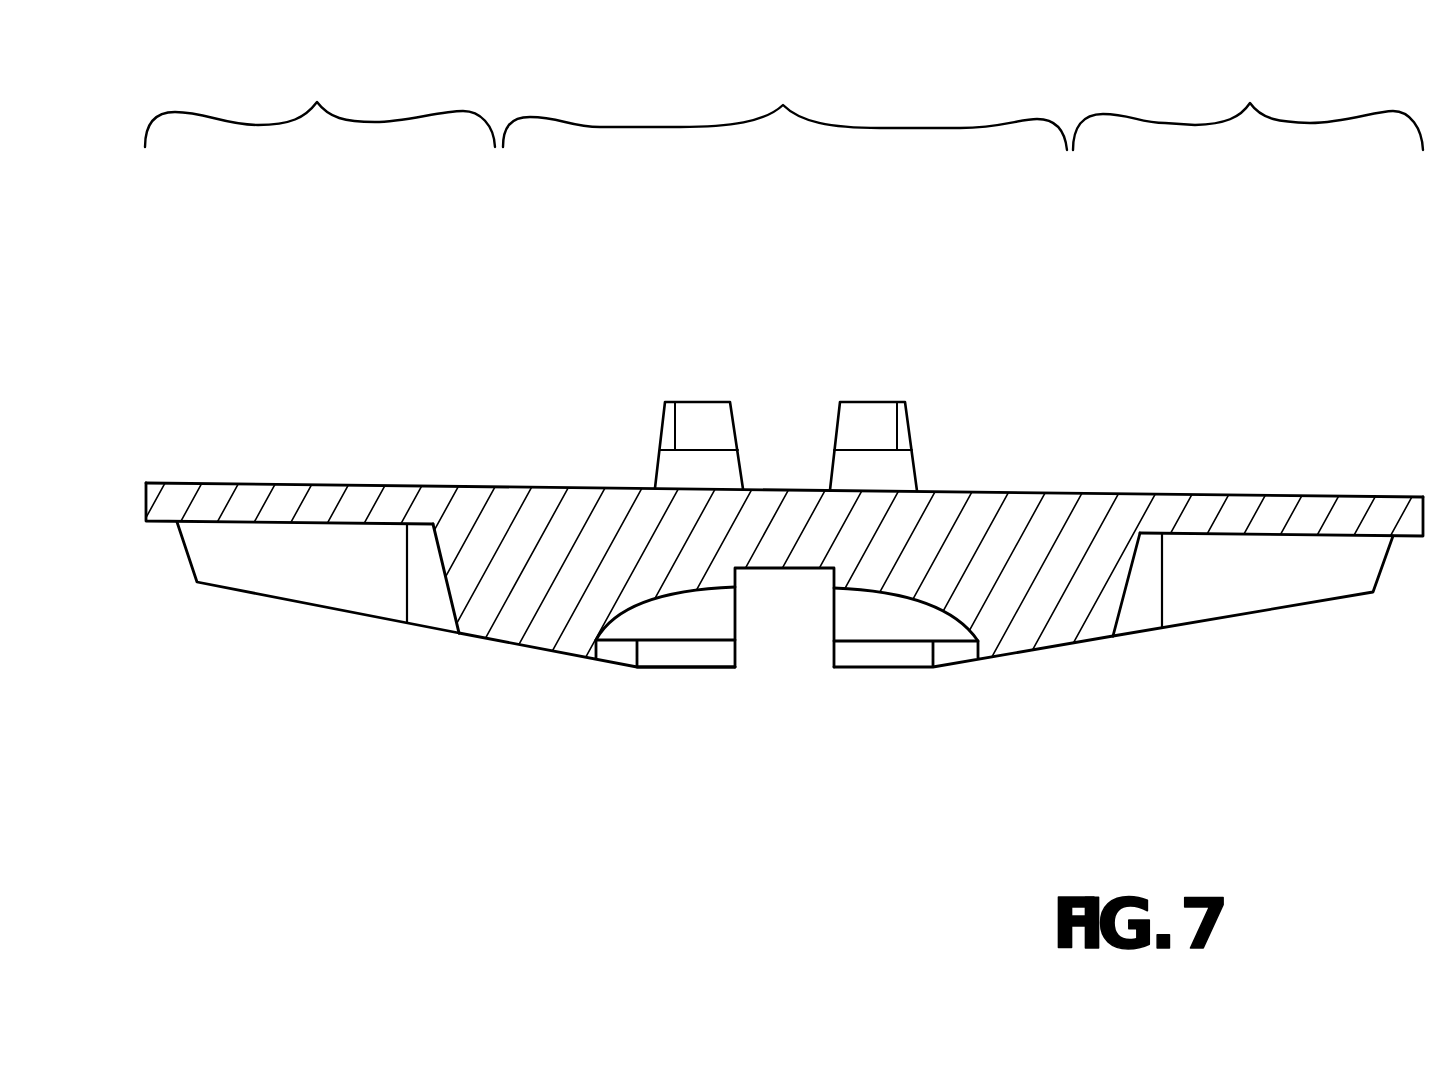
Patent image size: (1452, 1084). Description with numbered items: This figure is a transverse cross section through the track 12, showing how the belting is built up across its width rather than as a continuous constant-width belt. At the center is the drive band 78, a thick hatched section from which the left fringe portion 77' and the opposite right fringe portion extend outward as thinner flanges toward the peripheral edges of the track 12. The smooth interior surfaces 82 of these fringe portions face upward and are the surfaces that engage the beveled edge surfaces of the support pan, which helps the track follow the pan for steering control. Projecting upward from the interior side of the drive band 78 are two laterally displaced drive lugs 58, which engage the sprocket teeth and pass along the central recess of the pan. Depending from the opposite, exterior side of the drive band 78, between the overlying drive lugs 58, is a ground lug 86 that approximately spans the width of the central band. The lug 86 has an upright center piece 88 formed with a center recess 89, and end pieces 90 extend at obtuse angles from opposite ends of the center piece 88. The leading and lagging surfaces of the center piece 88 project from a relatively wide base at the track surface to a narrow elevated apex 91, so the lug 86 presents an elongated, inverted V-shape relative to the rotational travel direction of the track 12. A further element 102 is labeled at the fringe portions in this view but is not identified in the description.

The track 12 is at (1279, 492).
The drive lugs 58 is at (868, 402).
The left fringe portion 77' is at (320, 100).
The center drive band 78 is at (785, 103).
The smooth interior surfaces 82 is at (365, 485).
The lug 86 is at (477, 612).
The upright center piece 88 is at (882, 668).
The center recess 89 is at (767, 568).
The end pieces 90 is at (547, 648).
The apex 91 is at (703, 670).
The lateral wings 102 is at (297, 602).